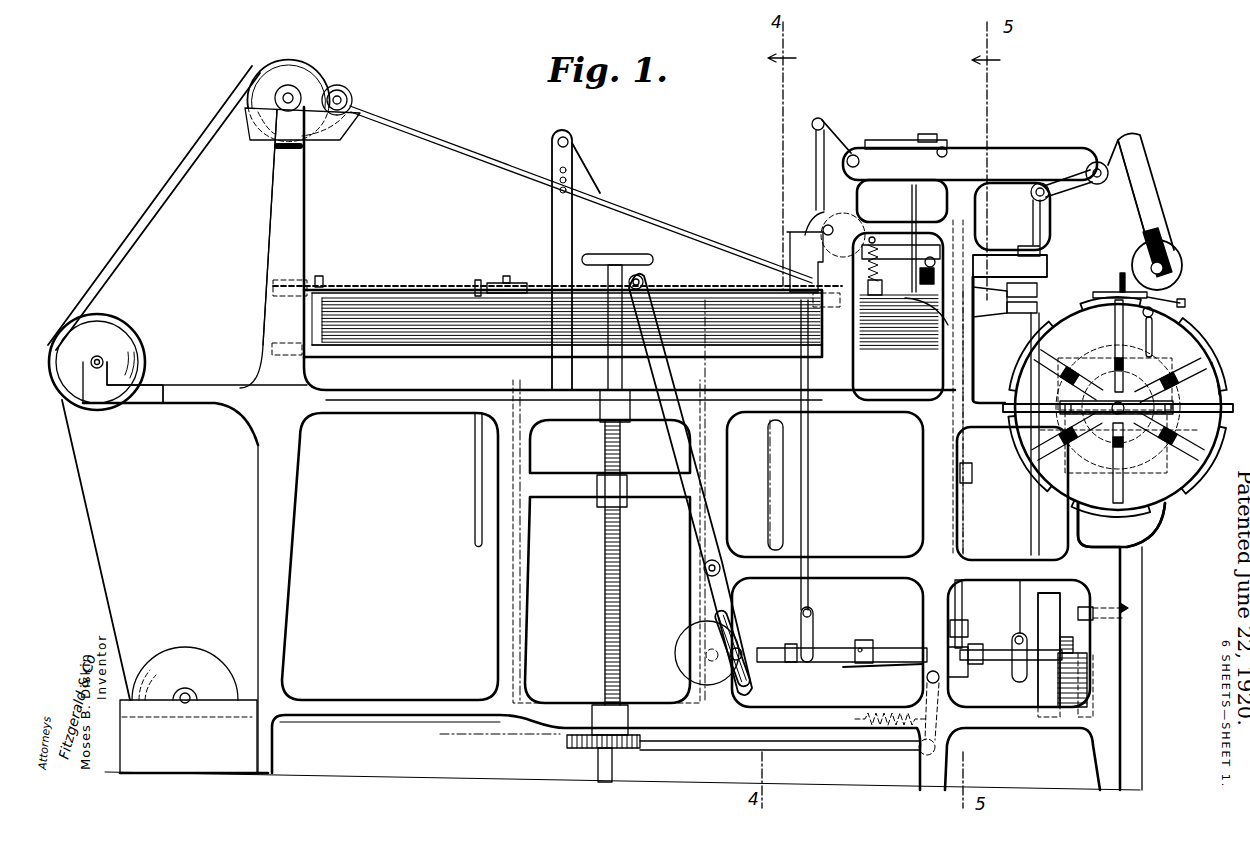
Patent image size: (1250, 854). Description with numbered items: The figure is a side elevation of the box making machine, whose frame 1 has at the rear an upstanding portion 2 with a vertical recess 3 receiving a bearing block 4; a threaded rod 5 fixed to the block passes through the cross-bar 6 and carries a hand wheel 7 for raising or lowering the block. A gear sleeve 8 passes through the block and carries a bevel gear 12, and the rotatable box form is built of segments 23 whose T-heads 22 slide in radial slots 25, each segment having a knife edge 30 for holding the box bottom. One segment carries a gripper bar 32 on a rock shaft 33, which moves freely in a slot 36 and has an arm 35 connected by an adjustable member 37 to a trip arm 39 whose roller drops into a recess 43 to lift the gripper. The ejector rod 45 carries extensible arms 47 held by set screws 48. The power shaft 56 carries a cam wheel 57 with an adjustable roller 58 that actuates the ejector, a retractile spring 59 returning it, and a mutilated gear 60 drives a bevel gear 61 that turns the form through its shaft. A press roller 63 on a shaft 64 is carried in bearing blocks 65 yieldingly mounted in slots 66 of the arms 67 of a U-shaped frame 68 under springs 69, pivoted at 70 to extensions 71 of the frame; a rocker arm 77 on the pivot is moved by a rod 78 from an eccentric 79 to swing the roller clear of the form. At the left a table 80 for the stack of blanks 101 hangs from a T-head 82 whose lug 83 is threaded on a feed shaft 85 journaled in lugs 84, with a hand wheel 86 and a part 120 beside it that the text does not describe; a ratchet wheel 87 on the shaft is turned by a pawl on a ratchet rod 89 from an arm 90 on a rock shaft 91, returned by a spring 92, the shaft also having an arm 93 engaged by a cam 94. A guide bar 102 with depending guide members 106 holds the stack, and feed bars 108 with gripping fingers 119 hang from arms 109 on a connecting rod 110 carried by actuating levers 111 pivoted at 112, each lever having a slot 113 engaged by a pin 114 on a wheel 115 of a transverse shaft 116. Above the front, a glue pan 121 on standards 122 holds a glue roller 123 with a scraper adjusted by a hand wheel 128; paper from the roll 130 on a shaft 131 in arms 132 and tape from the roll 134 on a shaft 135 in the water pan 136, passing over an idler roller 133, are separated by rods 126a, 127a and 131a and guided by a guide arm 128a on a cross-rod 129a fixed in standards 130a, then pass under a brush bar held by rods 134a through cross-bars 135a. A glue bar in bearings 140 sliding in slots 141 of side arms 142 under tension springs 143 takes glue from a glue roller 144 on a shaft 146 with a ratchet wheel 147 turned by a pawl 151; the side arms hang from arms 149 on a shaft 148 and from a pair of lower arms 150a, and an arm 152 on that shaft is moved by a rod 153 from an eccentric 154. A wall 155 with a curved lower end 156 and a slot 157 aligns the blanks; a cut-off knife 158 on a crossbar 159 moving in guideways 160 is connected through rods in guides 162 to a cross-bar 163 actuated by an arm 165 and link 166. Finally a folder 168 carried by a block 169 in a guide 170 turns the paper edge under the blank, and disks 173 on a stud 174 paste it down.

The frame 1 is at (257, 500).
The upstanding portion 2 is at (1185, 325).
The vertical recess 3 is at (1150, 500).
The bearing block 4 is at (1078, 455).
The threaded rod 5 is at (1120, 275).
The cross-bar 6 is at (1190, 318).
The hand wheel 7 is at (1102, 292).
The gear sleeve 8 is at (1060, 418).
The bevel gear 12 is at (519, 730).
The T-heads 22 is at (1052, 366).
The segments 23 is at (1086, 312).
The radial slots 25 is at (1090, 392).
The knife edge 30 is at (1212, 348).
The gripper bar 32 is at (1153, 310).
The rock shaft 33 is at (1168, 299).
The arm 35 is at (1186, 302).
The slot 36 is at (1124, 336).
The adjustably connected member 37 is at (1215, 362).
The trip arm 39 is at (1124, 452).
The recess 43 is at (1068, 440).
The ejector rod 45 is at (1166, 440).
The extensible arms 47 is at (1005, 403).
The set screws 48 is at (1180, 404).
The power shaft 56 is at (812, 664).
The cam wheel 57 is at (1048, 595).
The radially adjustable roller 58 is at (1075, 645).
The retractile spring 59 is at (1088, 690).
The mutilated gear 60 is at (1085, 672).
The bevel gear 61 is at (1125, 615).
The press roller 63 is at (1180, 256).
The shaft 64 is at (1183, 268).
The bearing blocks 65 is at (1165, 258).
The slots 66 is at (1162, 235).
The arms 67 is at (1150, 185).
The U-shaped frame member 68 is at (1124, 132).
The springs 69 is at (1144, 238).
The pivot 70 is at (1090, 163).
The extensions 71 is at (995, 160).
The rocker arm 77 is at (1072, 190).
The rod 78 is at (1028, 510).
The eccentric 79 is at (1020, 682).
The table 80 is at (440, 357).
The T-head 82 is at (712, 380).
The lug 83 is at (598, 495).
The lugs 84 is at (600, 412).
The feed shaft 85 is at (604, 574).
The hand wheel 86 is at (590, 255).
The ratchet wheel 87 is at (575, 748).
The ratchet rod 89 is at (735, 750).
The arm 90 is at (937, 745).
The rock shaft 91 is at (925, 678).
The retractile spring 92 is at (890, 730).
The arm 93 is at (870, 668).
The cam 94 is at (864, 640).
The stack of card board box body blanks 101 is at (373, 342).
The guide bar 102 is at (368, 292).
The depending guide members 106 is at (472, 455).
The feed bars 108 is at (478, 282).
The arms 109 is at (520, 283).
The connecting rod 110 is at (642, 278).
The actuating levers 111 is at (660, 310).
The pivot 112 is at (702, 570).
The slot 113 is at (735, 630).
The pin 114 is at (745, 650).
The wheel 115 is at (676, 652).
The transverse shaft 116 is at (705, 658).
The gripping finger 119 is at (272, 287).
The stem 120 is at (625, 260).
The glue pan 121 is at (255, 135).
The standards 122 is at (272, 218).
The glue roller 123 is at (262, 72).
The separator rod 126a is at (558, 192).
The separator rod 127a is at (558, 178).
The hand wheel 128 is at (340, 84).
The guide arm 128a is at (605, 190).
The cross-rod 129a is at (567, 130).
The roll of paper 130 is at (110, 322).
The standards 130a is at (556, 140).
The shaft 131 is at (105, 360).
The separator rod 131a is at (590, 172).
The horizontally extending arms 132 is at (192, 385).
The idler roller 133 is at (130, 358).
The roll of tape 134 is at (192, 650).
The rods 134a is at (852, 220).
The shaft 135 is at (190, 694).
The cross-bars 135a is at (915, 230).
The water pan 136 is at (260, 748).
The bearings 140 is at (925, 305).
The slots 141 is at (888, 258).
The side arms 142 is at (930, 138).
The tension springs 143 is at (928, 255).
The glue roller 144 is at (816, 210).
The shaft 146 is at (820, 228).
The ratchet wheel 147 is at (788, 240).
The shaft 148 is at (856, 150).
The arms 149 is at (888, 147).
The arms 150a is at (878, 272).
The pawl 151 is at (872, 235).
The arm 152 is at (820, 116).
The rod 153 is at (810, 500).
The eccentric 154 is at (812, 618).
The wall 155 is at (940, 440).
The curved lower end 156 is at (945, 472).
The transverse slot 157 is at (978, 340).
The cut-off knife 158 is at (976, 243).
The crossbar 159 is at (978, 225).
The guideways 160 is at (980, 318).
The guides 162 is at (974, 476).
The cross-bar 163 is at (968, 630).
The arm 165 is at (970, 670).
The link 166 is at (955, 640).
The folder 168 is at (990, 268).
The block 169 is at (1045, 250).
The guide 170 is at (1045, 255).
The disks 173 is at (1040, 306).
The stud 174 is at (1040, 288).